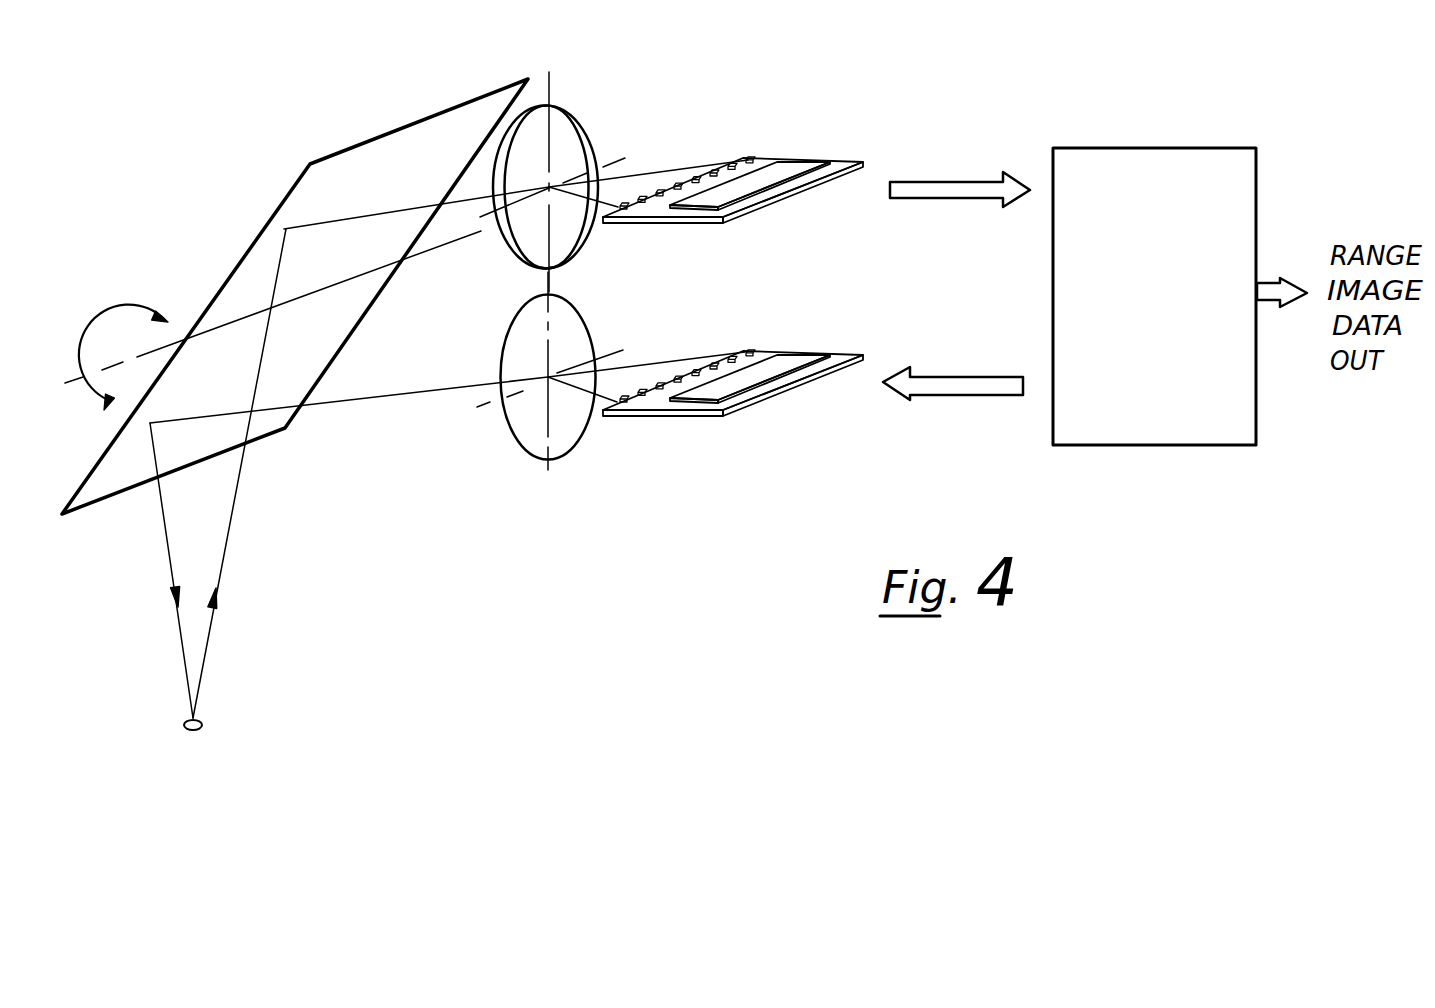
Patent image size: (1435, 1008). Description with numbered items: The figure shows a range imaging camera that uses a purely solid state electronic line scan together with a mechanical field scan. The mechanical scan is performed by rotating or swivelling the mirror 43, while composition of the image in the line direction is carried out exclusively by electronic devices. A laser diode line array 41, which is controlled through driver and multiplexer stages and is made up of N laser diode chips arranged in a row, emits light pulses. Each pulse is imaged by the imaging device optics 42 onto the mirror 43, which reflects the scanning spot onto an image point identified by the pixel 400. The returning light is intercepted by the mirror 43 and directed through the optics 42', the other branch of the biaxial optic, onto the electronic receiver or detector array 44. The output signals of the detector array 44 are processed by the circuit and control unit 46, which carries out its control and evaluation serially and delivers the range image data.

The mirror 43 is at (265, 218).
The optics 42' is at (576, 168).
The imaging device optics 42 is at (541, 406).
The detector array 44 is at (800, 162).
The laser diode line array 41 is at (680, 418).
The pixel 400 is at (192, 730).
The control and evaluation unit 46 is at (1144, 287).